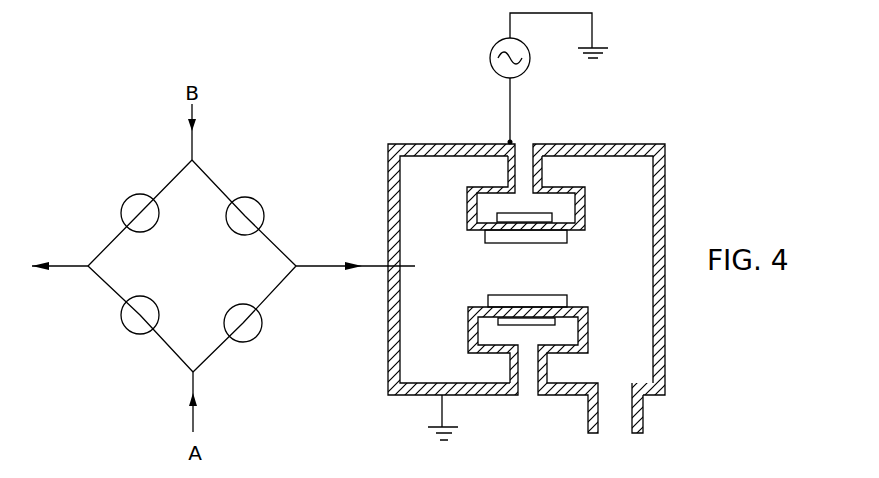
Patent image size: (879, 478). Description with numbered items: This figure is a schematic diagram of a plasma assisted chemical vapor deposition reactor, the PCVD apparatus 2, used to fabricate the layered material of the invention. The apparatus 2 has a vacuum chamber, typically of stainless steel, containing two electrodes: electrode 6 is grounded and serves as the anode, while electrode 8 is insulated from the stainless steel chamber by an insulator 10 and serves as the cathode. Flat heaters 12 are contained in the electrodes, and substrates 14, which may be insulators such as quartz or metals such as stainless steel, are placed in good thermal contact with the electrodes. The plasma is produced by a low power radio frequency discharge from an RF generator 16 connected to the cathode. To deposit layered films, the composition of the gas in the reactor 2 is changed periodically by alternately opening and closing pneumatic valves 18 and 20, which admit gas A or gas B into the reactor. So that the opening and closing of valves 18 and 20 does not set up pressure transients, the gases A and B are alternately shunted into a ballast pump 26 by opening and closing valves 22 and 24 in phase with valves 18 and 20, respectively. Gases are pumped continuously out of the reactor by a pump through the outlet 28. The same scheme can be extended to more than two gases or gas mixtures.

The PCVD apparatus 2 is at (666, 150).
The electrode 6 is at (468, 331).
The electrode 8 is at (463, 211).
The insulator 10 is at (538, 144).
The flat heaters 12 is at (552, 323).
The substrates 14 is at (538, 243).
The RF generator 16 is at (490, 66).
The pneumatic valve 18 is at (251, 341).
The pneumatic valve 20 is at (254, 200).
The valve 22 is at (130, 197).
The valve 24 is at (126, 331).
The ballast pump 26 is at (58, 265).
The outlet 28 is at (643, 412).